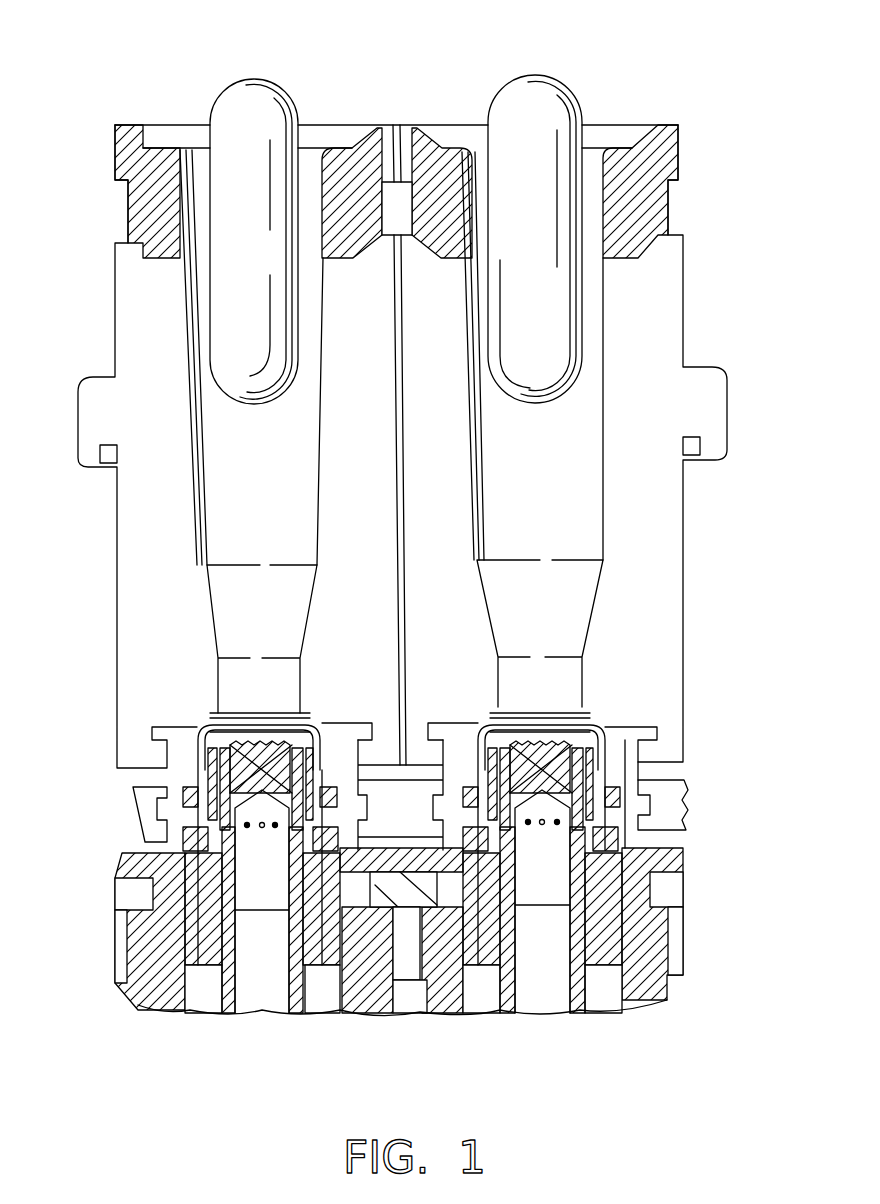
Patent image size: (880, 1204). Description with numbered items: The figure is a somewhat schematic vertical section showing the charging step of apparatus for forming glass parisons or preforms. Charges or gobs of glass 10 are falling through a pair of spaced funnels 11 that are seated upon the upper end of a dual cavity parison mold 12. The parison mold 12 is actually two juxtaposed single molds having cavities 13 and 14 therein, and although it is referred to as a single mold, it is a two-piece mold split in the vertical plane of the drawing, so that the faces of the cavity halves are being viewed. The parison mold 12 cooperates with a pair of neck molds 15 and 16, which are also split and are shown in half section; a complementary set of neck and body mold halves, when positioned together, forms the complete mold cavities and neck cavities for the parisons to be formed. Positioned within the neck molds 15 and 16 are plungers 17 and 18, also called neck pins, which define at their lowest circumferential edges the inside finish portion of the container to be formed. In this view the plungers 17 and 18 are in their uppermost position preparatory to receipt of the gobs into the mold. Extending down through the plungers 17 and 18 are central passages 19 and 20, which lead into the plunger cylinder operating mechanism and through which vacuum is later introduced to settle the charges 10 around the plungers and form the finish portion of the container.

The gobs of glass 10 is at (505, 122).
The funnels 11 is at (417, 153).
The parison mold 12 is at (665, 357).
The cavity 13 is at (326, 432).
The cavity 14 is at (471, 430).
The neck mold 15 is at (173, 733).
The neck mold 16 is at (632, 728).
The plunger 17 is at (255, 757).
The plunger 18 is at (548, 745).
The central passage 19 is at (247, 848).
The central passage 20 is at (548, 857).